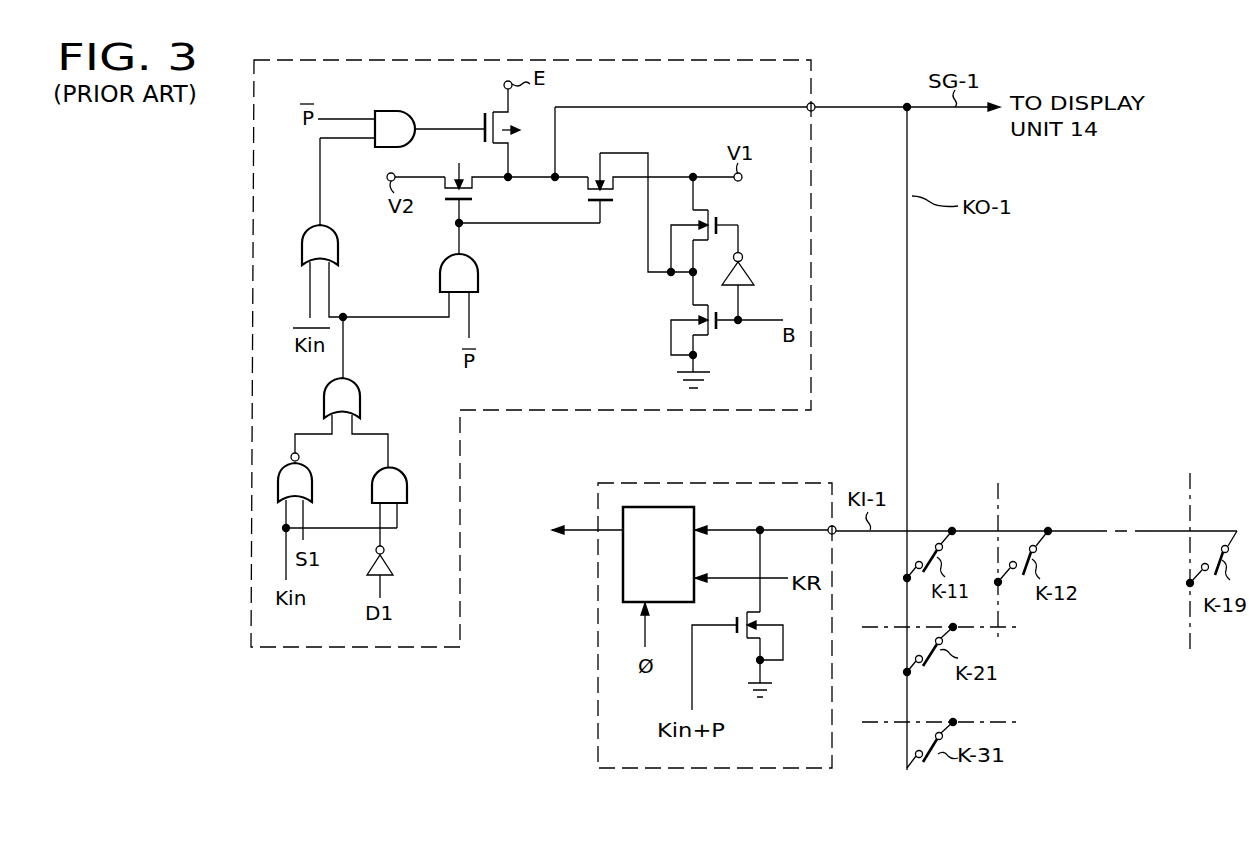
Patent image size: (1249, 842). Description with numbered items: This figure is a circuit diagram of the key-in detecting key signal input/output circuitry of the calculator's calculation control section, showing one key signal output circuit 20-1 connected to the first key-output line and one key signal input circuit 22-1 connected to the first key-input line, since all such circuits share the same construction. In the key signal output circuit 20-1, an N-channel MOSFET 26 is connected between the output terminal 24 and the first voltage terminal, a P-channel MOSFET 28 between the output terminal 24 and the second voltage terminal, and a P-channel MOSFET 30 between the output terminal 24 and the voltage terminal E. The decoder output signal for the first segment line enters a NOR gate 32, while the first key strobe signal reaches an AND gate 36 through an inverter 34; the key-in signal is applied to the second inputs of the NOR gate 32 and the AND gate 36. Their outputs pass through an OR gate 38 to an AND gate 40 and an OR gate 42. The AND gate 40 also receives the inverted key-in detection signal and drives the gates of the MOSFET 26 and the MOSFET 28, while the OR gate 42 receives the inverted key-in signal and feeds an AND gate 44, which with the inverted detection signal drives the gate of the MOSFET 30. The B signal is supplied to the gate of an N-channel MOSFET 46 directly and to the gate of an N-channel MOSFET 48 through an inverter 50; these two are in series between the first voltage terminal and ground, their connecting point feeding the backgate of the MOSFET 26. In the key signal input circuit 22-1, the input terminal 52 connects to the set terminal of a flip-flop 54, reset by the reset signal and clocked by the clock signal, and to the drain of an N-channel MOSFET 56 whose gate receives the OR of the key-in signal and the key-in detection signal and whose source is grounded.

The key signal output circuit 20-1 is at (811, 214).
The key signal input circuit 22-1 is at (725, 482).
The output terminal 24 is at (815, 106).
The N-channel MOSFET 26 is at (617, 196).
The P-channel MOSFET 28 is at (446, 171).
The P-channel MOSFET 30 is at (502, 124).
The NOR gate 32 is at (305, 474).
The inverter 34 is at (394, 562).
The AND gate 36 is at (406, 484).
The OR gate 38 is at (360, 406).
The AND gate 40 is at (478, 268).
The OR gate 42 is at (338, 256).
The AND gate 44 is at (396, 112).
The N-channel MOSFET 46 is at (674, 332).
The N-channel MOSFET 48 is at (712, 207).
The inverter 50 is at (773, 266).
The input terminal 52 is at (830, 526).
The flip-flop 54 is at (697, 522).
The N-channel MOSFET 56 is at (766, 614).